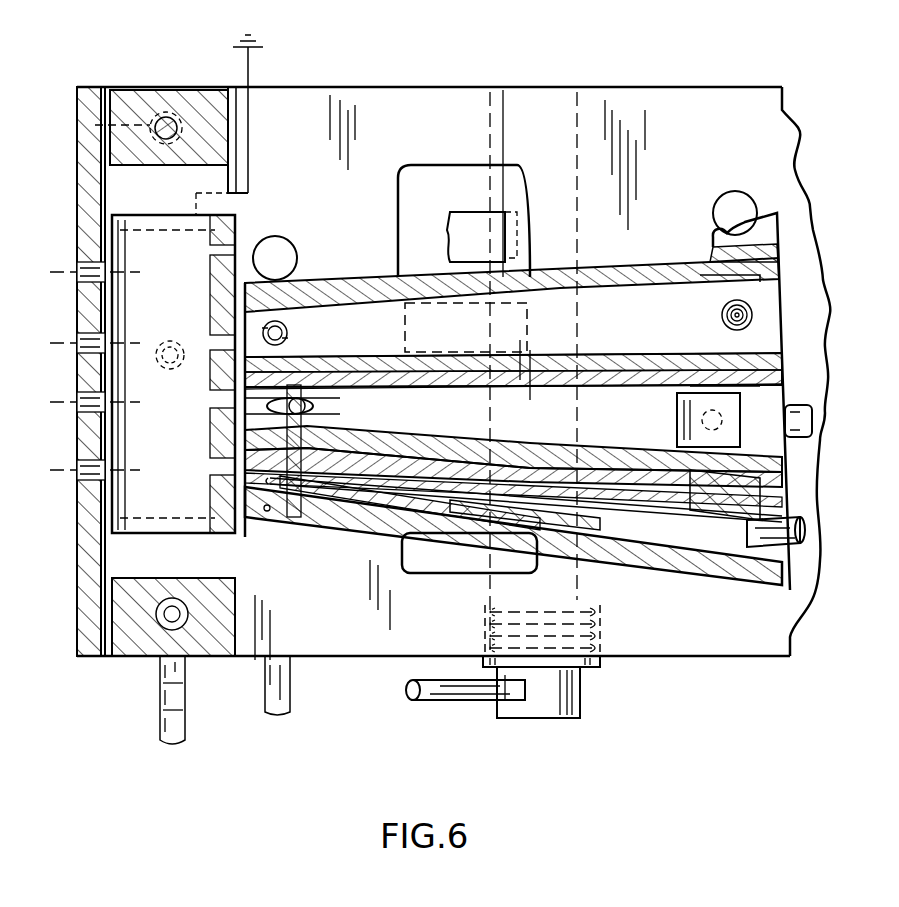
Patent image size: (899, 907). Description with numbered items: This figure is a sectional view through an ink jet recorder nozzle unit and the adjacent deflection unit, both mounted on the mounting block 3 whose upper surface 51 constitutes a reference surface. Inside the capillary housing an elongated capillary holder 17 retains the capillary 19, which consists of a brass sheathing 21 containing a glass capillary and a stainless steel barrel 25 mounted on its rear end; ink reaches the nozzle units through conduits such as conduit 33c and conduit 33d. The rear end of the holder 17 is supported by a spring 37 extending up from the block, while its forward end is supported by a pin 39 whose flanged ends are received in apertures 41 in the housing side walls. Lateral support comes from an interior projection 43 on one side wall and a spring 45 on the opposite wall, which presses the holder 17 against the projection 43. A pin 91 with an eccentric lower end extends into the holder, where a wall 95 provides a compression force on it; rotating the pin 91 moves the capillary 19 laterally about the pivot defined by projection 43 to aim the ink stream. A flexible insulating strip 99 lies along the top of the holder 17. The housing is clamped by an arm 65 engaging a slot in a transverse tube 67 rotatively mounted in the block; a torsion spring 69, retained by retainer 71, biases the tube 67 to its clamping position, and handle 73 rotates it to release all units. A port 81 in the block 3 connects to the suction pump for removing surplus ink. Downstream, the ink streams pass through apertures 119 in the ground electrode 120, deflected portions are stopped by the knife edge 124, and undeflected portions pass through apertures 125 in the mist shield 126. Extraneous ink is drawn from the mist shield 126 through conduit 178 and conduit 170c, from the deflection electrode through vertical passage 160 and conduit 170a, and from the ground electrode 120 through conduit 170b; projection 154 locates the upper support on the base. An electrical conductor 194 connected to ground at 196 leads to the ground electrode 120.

The mounting block 3 is at (358, 80).
The capillary holder 17 is at (624, 390).
The capillary 19 is at (585, 540).
The brass sheathing 21 is at (425, 528).
The stainless steel barrel 25 is at (655, 563).
The conduit 33c is at (800, 405).
The conduit 33d is at (792, 548).
The spring 37 is at (726, 322).
The pin 39 is at (320, 370).
The apertures 41 is at (298, 360).
The interior projection 43 is at (706, 278).
The spring 45 is at (680, 448).
The upper surface 51 is at (705, 95).
The arm 65 is at (528, 368).
The transverse tube 67 is at (540, 700).
The torsion spring 69 is at (600, 632).
The retainer 71 is at (598, 667).
The handle 73 is at (460, 698).
The port 81 is at (268, 673).
The pin 91 is at (268, 400).
The wall 95 is at (305, 404).
The flexible insulating strip 99 is at (677, 420).
The apertures 119 is at (210, 270).
The ground electrode 120 is at (162, 238).
The knife edge 124 is at (128, 480).
The apertures 125 is at (105, 340).
The mist shield 126 is at (75, 100).
The projection 154 is at (166, 117).
The vertical passage 160 is at (172, 598).
The conduit 170a is at (160, 672).
The conduit 170b is at (160, 700).
The conduit 170c is at (160, 726).
The conduit 178 is at (120, 125).
The electrical conductor 194 is at (245, 65).
The ground 196 is at (258, 42).